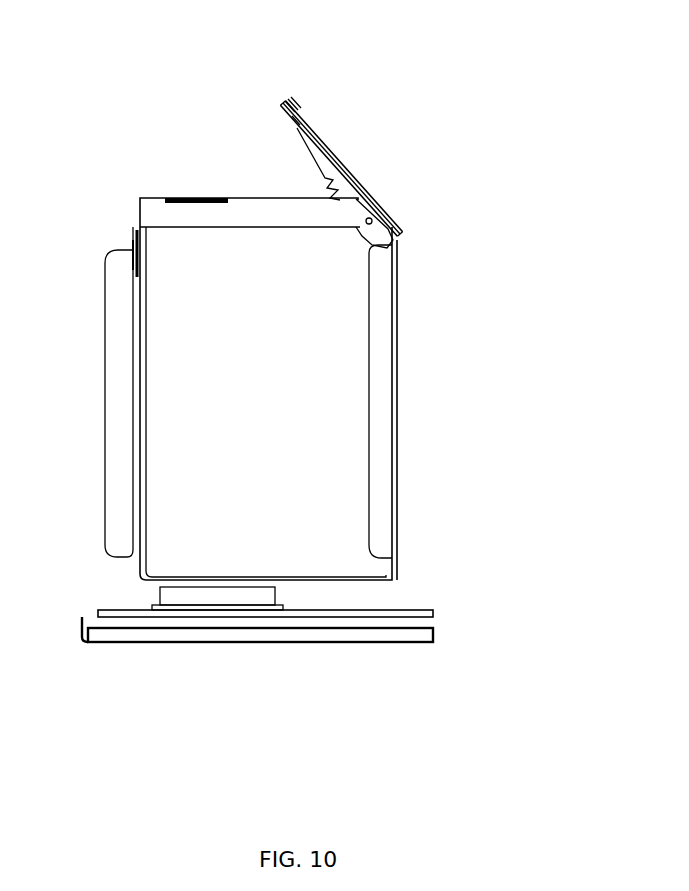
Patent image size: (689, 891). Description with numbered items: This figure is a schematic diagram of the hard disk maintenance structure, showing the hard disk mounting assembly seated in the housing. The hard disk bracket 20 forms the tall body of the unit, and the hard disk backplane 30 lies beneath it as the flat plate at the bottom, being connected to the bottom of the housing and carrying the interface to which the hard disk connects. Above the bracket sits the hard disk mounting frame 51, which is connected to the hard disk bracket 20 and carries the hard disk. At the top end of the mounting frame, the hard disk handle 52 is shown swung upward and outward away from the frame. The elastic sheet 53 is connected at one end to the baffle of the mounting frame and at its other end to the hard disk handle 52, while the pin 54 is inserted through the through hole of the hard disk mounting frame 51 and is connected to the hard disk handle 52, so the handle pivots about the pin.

The hard disk bracket 20 is at (384, 409).
The hard disk backplane 30 is at (270, 640).
The hard disk mounting frame 51 is at (165, 213).
The hard disk handle 52 is at (338, 153).
The elastic sheet 53 is at (200, 195).
The pin 54 is at (283, 103).